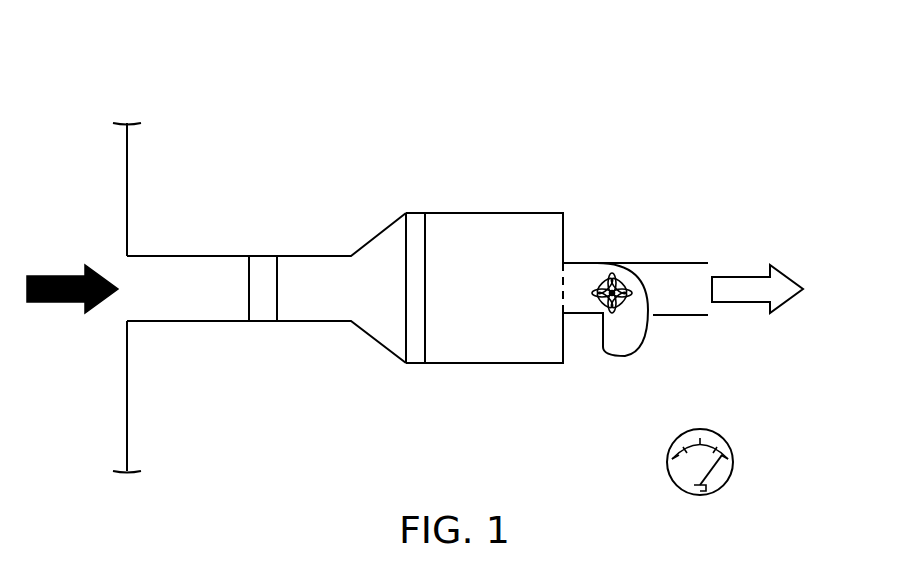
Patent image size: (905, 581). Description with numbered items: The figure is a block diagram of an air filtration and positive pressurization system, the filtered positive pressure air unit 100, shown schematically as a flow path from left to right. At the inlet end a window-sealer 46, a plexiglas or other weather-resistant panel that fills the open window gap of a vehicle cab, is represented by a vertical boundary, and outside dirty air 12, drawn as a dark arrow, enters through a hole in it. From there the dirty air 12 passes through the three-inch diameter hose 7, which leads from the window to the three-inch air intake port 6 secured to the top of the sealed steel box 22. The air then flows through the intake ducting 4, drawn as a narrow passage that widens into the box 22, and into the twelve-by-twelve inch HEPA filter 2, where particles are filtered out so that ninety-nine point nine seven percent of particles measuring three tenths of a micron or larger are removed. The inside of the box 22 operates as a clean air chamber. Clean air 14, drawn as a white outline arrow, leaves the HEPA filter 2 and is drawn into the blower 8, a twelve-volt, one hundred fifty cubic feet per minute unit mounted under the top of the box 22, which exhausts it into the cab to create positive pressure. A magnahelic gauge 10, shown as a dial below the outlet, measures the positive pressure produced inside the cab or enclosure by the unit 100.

The filtered positive pressure air unit 100 is at (476, 84).
The window-sealer 46 is at (127, 151).
The hose 7 is at (187, 253).
The air intake port 6 is at (266, 265).
The intake ducting 4 is at (315, 323).
The HEPA filter 2 is at (416, 359).
The box 22 is at (500, 212).
The blower 8 is at (612, 276).
The dirty air 12 is at (57, 303).
The clean air 14 is at (745, 304).
The magnahelic gauge 10 is at (702, 428).